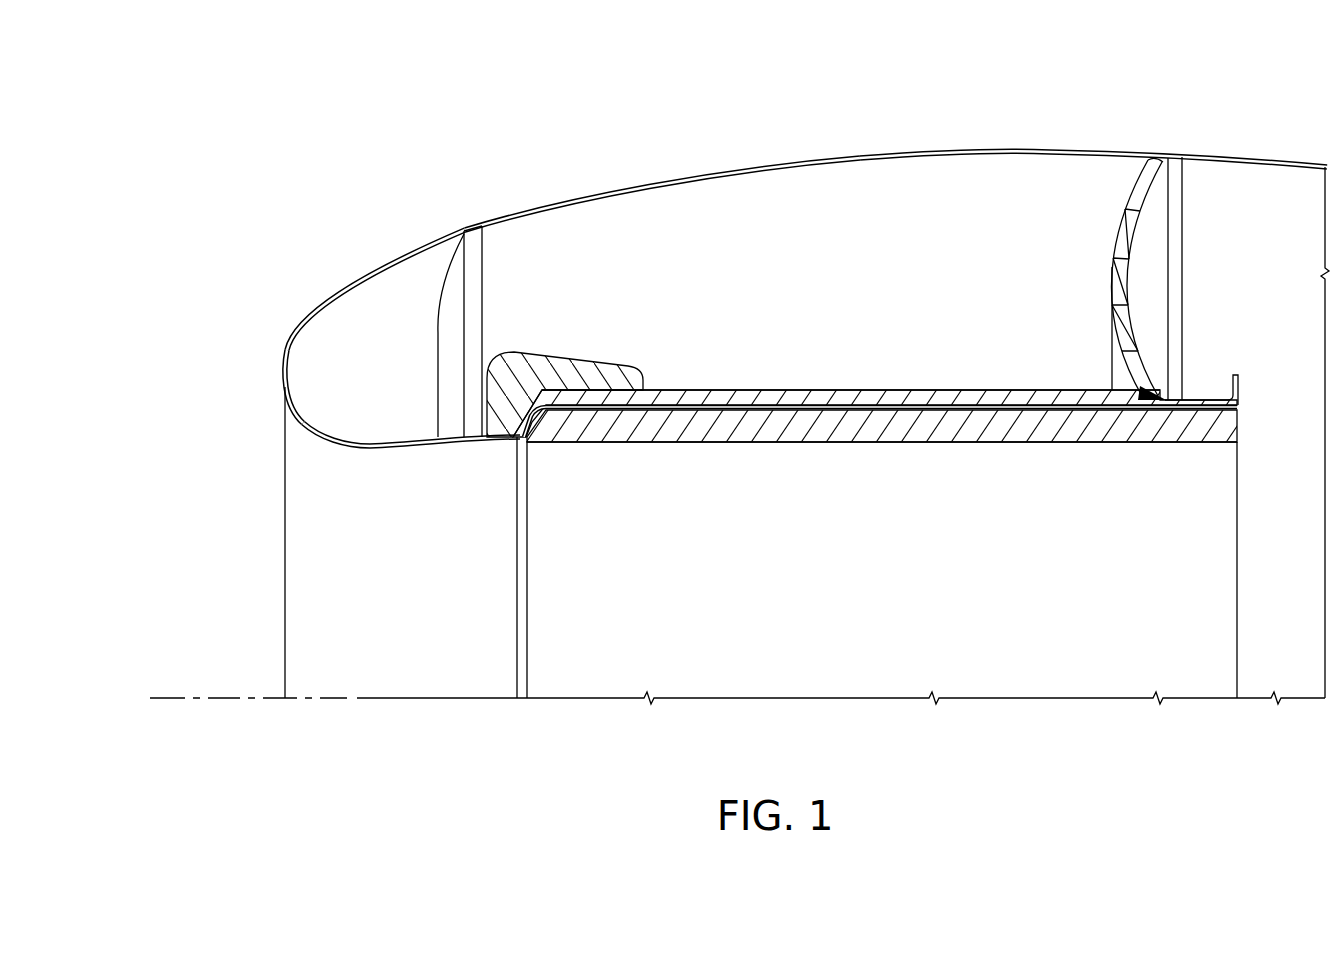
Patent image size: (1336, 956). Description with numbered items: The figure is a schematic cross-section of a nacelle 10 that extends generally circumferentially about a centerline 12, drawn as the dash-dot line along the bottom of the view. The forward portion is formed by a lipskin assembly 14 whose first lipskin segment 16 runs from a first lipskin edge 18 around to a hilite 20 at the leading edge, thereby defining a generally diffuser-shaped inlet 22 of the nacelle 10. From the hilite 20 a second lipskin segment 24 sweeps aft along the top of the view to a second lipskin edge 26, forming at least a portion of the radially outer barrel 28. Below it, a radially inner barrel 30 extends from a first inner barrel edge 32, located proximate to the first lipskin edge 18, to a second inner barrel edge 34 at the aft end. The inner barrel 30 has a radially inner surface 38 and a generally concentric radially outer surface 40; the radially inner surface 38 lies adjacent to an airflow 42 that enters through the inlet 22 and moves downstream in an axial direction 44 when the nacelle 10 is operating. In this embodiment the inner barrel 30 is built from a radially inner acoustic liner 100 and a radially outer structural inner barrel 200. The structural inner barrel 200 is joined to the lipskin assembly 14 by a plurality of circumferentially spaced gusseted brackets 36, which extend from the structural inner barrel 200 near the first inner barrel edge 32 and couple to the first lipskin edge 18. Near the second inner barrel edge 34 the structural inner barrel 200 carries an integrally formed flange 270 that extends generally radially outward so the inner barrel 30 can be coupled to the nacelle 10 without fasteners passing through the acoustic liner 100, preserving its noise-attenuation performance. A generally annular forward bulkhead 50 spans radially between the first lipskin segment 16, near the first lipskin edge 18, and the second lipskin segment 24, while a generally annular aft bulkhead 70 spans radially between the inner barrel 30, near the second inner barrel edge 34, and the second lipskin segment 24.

The nacelle 10 is at (774, 279).
The centerline 12 is at (180, 700).
The lipskin assembly 14 is at (402, 258).
The first lipskin segment 16 is at (373, 450).
The first lipskin edge 18 is at (460, 462).
The hilite 20 is at (287, 387).
The inlet 22 is at (265, 595).
The second lipskin segment 24 is at (676, 185).
The second lipskin edge 26 is at (1317, 137).
The radially outer barrel 28 is at (863, 158).
The radially inner barrel 30 is at (713, 442).
The first inner barrel edge 32 is at (500, 462).
The second inner barrel edge 34 is at (1222, 455).
The gusseted brackets 36 is at (548, 353).
The radially inner surface 38 is at (942, 442).
The radially outer surface 40 is at (815, 390).
The airflow 42 is at (900, 551).
The axial direction 44 is at (747, 671).
The forward bulkhead 50 is at (479, 254).
The aft bulkhead 70 is at (1128, 190).
The acoustic liner 100 is at (1097, 428).
The structural inner barrel 200 is at (1084, 395).
The flange 270 is at (1240, 383).